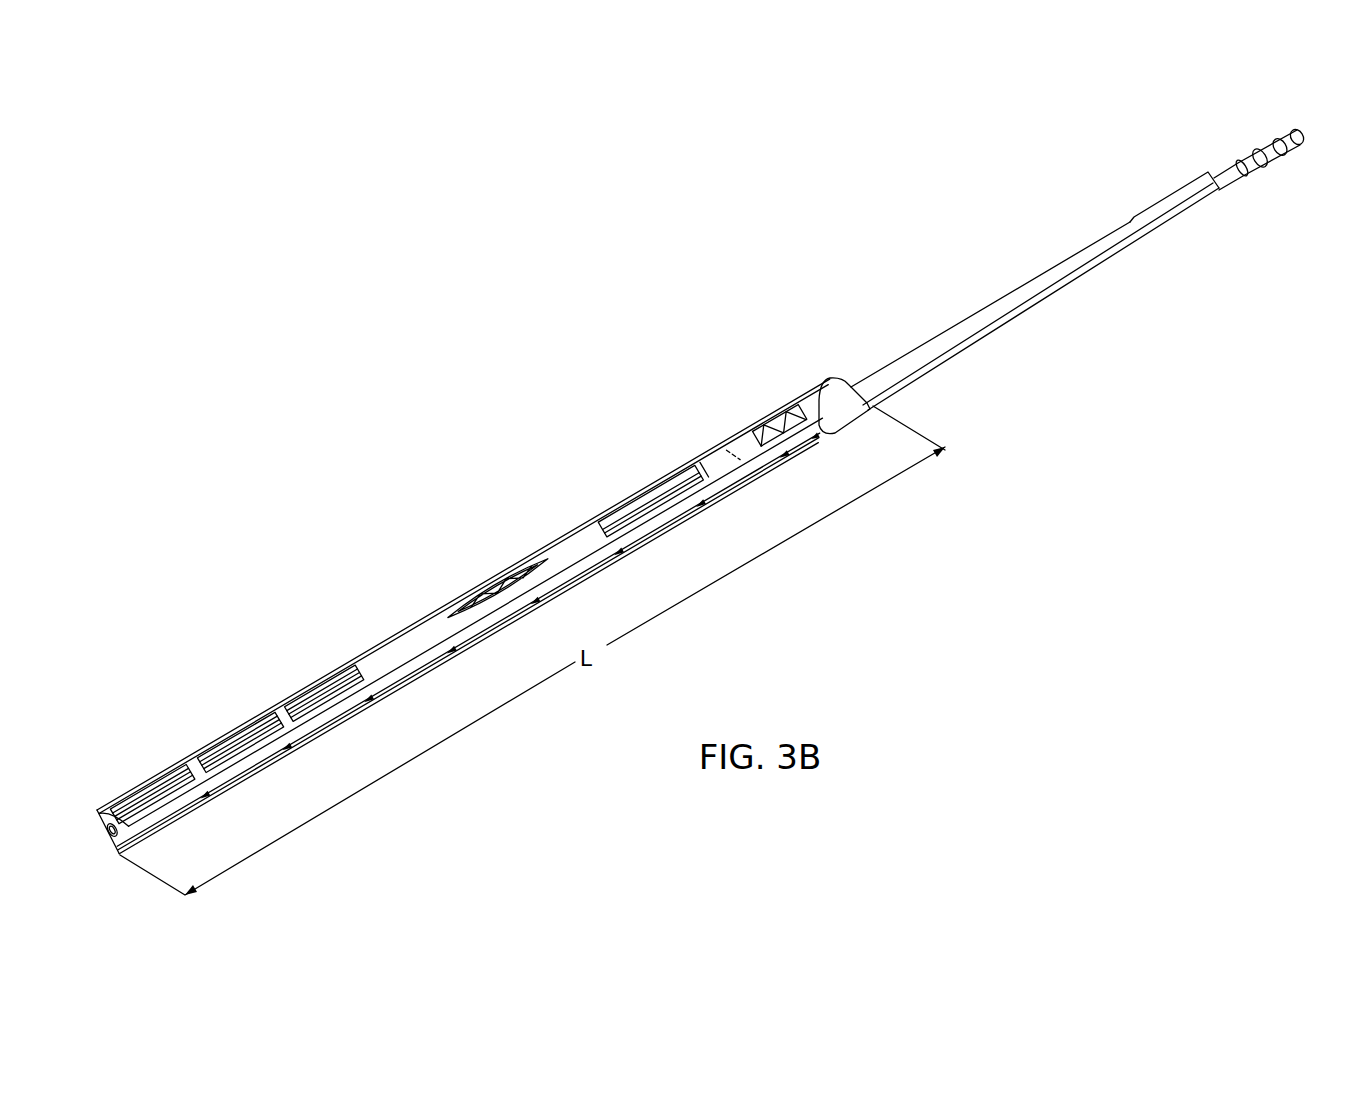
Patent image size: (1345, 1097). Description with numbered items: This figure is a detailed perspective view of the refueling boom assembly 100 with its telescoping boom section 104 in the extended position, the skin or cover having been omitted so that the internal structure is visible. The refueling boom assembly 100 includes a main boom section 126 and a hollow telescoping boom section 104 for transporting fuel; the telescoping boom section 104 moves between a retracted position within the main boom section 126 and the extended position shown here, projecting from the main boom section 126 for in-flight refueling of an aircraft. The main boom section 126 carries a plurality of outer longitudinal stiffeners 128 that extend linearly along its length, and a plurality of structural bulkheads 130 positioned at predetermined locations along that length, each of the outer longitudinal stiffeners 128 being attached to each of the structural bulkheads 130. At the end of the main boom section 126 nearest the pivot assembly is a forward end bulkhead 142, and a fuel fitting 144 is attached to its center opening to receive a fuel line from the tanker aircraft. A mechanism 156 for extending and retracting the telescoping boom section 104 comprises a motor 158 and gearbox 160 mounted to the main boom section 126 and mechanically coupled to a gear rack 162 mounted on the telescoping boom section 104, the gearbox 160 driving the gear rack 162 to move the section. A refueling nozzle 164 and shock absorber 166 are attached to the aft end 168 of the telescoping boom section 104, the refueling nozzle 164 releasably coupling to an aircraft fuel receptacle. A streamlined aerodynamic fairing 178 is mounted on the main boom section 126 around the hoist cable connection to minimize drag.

The refueling boom assembly 100 is at (356, 561).
The telescoping boom section 104 is at (992, 327).
The main boom section 126 is at (336, 631).
The outer longitudinal stiffeners 128 is at (248, 750).
The structural bulkheads 130 is at (208, 795).
The forward end bulkhead 142 is at (116, 858).
The fuel fitting 144 is at (104, 824).
The mechanism for extending and retracting the telescoping boom section 156 is at (711, 431).
The motor 158 is at (706, 467).
The gearbox 160 is at (750, 440).
The gear rack 162 is at (992, 302).
The refueling nozzle 164 is at (1296, 128).
The shock absorber 166 is at (1240, 163).
The aft end 168 is at (1273, 193).
The fairing 178 is at (496, 586).